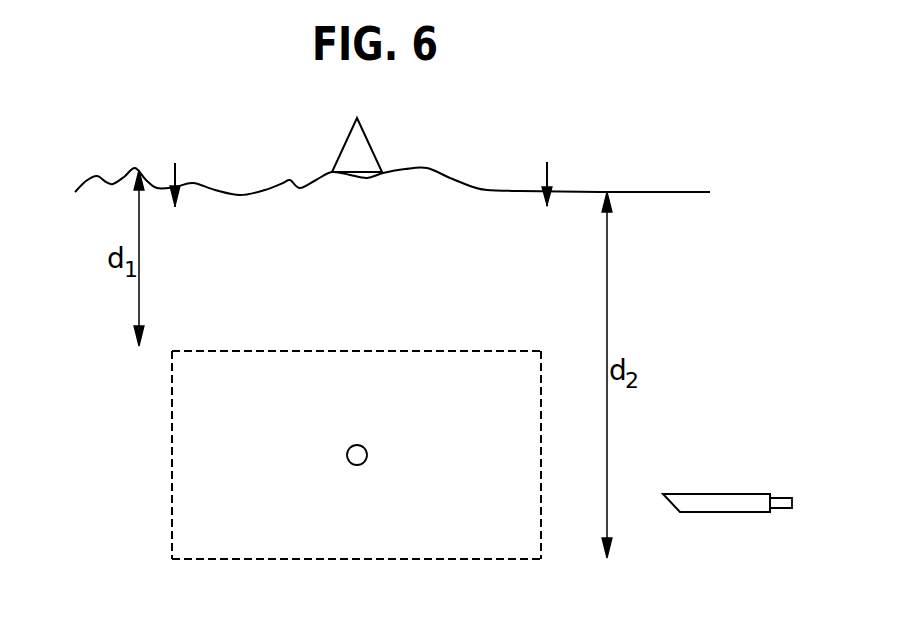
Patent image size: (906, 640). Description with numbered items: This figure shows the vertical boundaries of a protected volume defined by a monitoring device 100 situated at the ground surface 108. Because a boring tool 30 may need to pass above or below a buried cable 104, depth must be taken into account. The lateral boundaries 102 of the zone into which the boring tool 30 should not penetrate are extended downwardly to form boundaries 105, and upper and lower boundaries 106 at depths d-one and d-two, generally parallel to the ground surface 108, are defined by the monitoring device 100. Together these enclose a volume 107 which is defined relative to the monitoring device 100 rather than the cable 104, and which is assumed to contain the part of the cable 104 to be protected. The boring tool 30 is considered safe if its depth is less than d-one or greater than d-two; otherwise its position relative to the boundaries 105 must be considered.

The monitoring device 100 is at (372, 140).
The lateral boundaries 102 is at (176, 171).
The cable 104 is at (363, 447).
The boundaries 105 is at (174, 459).
The upper and lower boundaries 106 is at (313, 350).
The volume 107 is at (261, 512).
The ground surface 108 is at (457, 179).
The boring tool 30 is at (748, 493).